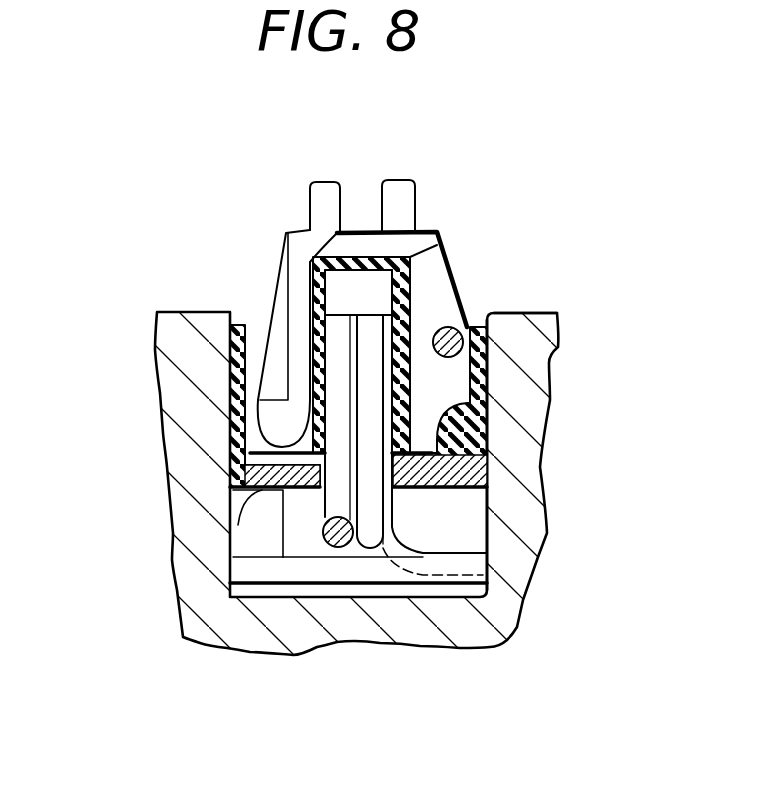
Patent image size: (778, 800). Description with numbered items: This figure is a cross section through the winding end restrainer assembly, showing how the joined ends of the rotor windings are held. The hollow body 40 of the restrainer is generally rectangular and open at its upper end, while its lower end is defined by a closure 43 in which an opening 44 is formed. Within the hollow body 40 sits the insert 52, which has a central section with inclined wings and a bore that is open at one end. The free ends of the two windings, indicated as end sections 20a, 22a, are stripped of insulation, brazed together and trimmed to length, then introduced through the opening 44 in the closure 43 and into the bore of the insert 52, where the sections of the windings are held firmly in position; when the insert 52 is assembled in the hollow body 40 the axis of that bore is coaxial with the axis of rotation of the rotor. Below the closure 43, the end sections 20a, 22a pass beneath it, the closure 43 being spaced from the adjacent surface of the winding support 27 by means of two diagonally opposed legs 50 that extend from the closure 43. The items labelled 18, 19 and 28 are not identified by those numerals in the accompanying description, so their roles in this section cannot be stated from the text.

The first terminal 18 is at (320, 182).
The second terminal 19 is at (403, 178).
The insert 52 is at (276, 264).
The housing side wall 28 is at (523, 313).
The end section of winding 20a is at (335, 381).
The end section of winding 22a is at (370, 374).
The hollow body 40 is at (246, 436).
The opening 44 is at (395, 487).
The closure 43 is at (253, 530).
The legs 50 is at (247, 540).
The winding support 27 is at (300, 651).